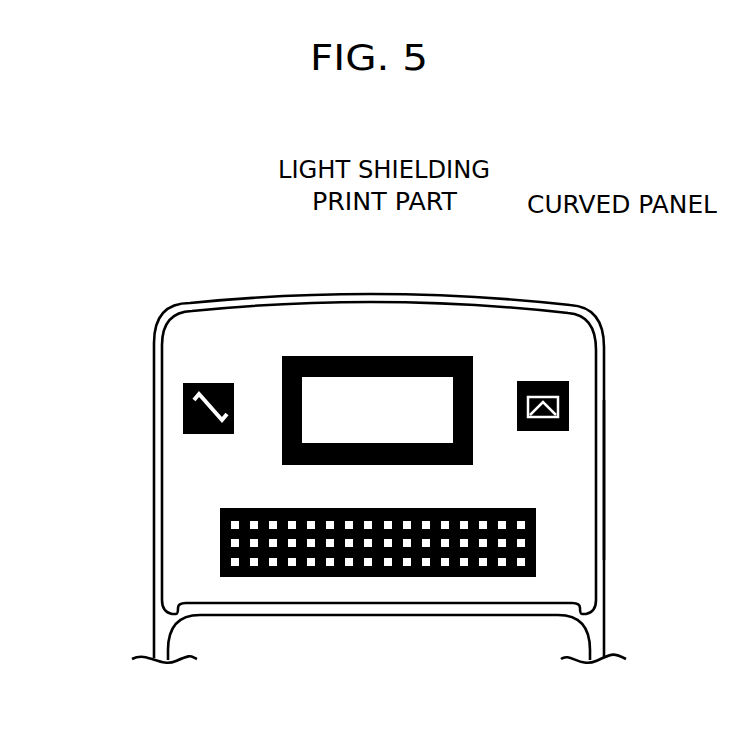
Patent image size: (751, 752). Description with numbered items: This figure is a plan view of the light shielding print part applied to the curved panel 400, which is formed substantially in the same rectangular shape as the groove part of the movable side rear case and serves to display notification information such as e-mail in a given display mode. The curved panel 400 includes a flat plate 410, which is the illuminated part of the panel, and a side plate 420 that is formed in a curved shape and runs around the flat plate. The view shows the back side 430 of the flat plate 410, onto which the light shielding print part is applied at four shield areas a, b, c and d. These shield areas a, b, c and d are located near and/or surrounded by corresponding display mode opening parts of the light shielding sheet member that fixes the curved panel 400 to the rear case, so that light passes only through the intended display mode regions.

The curved panel 400 is at (548, 295).
The flat plate 410 is at (605, 471).
The side plate 420 is at (176, 308).
The back side 430 is at (555, 345).
The shield area a is at (371, 348).
The shield area b is at (211, 376).
The shield area c is at (570, 424).
The shield area d is at (537, 547).